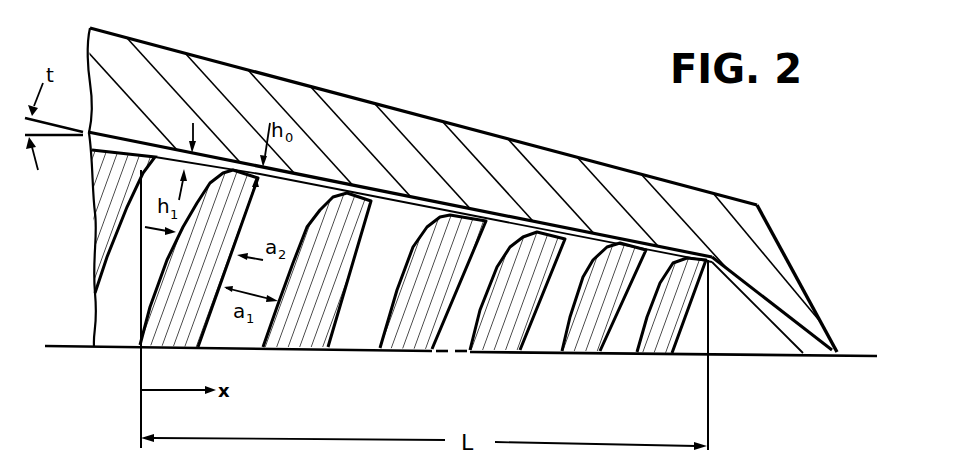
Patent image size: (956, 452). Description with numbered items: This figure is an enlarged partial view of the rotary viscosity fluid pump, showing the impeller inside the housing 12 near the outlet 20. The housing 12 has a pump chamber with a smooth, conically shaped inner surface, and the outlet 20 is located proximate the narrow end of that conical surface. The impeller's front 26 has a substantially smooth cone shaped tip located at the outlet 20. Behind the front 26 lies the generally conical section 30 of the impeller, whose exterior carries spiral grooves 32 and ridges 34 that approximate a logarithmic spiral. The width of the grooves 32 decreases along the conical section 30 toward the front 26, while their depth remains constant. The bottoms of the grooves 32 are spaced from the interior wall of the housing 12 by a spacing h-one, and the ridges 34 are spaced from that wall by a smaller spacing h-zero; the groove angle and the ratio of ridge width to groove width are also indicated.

The housing 12 is at (600, 148).
The outlet 20 is at (840, 352).
The front 26 is at (735, 313).
The conical section 30 is at (308, 197).
The spiral grooves 32 is at (372, 333).
The ridges 34 is at (330, 262).